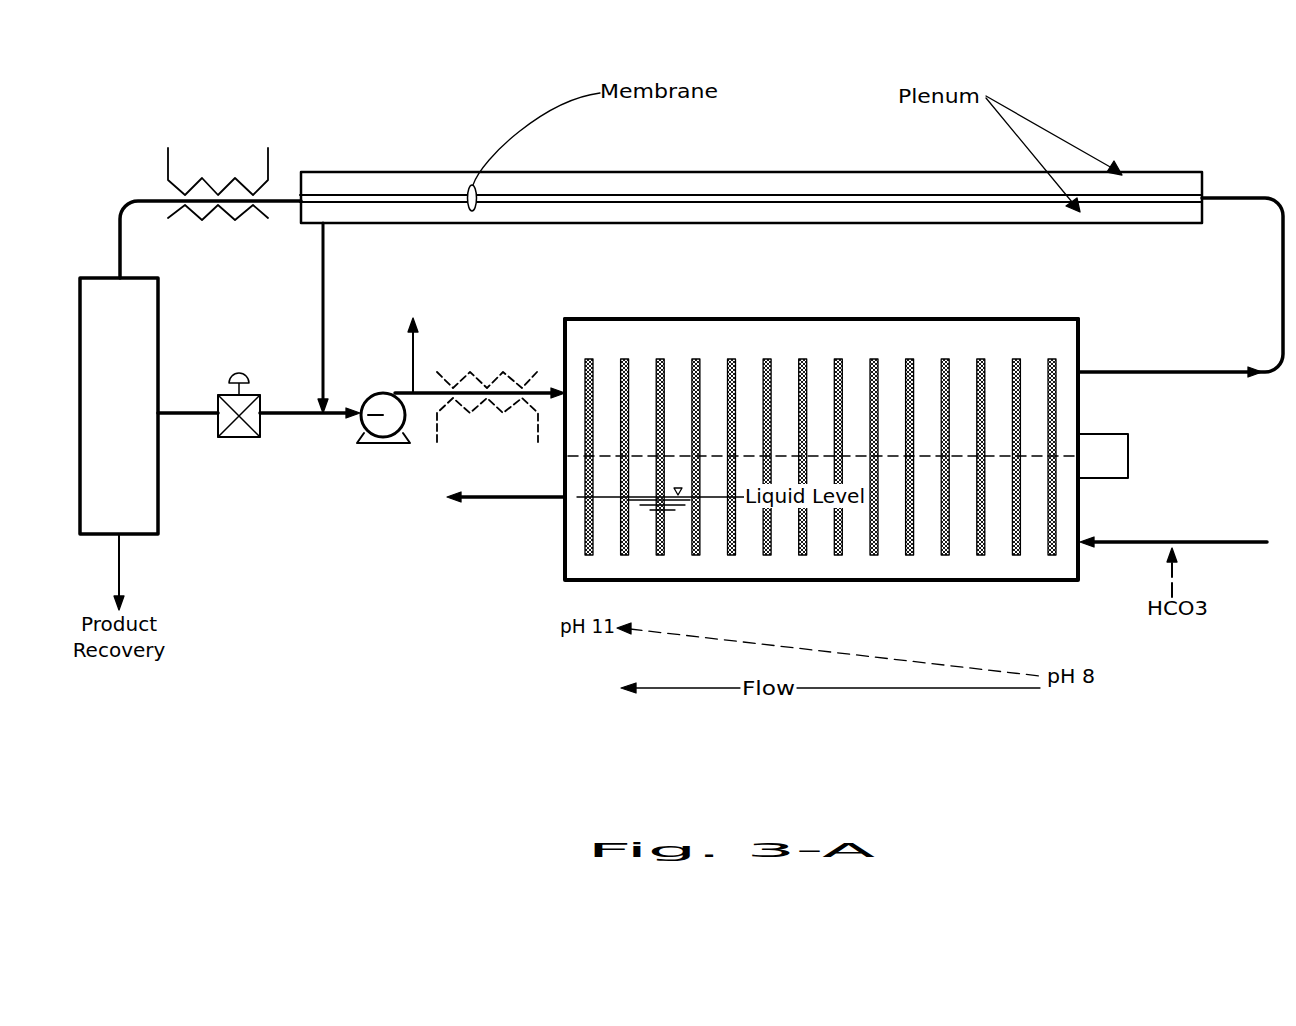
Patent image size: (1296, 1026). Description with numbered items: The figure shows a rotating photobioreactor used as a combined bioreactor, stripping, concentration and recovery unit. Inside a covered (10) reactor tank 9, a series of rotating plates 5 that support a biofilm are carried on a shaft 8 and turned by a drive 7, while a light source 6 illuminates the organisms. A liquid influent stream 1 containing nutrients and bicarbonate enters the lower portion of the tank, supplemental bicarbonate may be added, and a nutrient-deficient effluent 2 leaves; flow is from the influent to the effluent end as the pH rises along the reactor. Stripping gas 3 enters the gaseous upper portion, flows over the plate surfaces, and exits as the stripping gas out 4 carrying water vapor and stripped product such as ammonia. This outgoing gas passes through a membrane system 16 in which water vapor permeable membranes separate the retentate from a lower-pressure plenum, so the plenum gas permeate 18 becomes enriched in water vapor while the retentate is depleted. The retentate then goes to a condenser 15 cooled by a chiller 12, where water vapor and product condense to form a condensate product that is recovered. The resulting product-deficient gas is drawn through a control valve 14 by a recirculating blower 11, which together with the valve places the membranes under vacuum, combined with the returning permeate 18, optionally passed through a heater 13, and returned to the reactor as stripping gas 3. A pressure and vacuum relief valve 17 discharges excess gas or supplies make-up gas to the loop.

The influent stream 1 is at (1173, 527).
The effluent 2 is at (502, 522).
The stripping gas 3 is at (259, 450).
The stripping gas out 4 is at (1180, 287).
The rotating plates 5 is at (820, 457).
The light source 6 is at (820, 457).
The drive 7 is at (1156, 456).
The shaft 8 is at (823, 458).
The reactor tank 9 is at (885, 310).
The cover 10 is at (821, 299).
The blower 11 is at (457, 441).
The chiller 12 is at (210, 213).
The heater 13 is at (486, 388).
The control valve 14 is at (243, 360).
The condenser 15 is at (119, 406).
The gas permeable membrane 16 is at (751, 180).
The pressure and vacuum relief valve 17 is at (412, 329).
The plenum gas permeate 18 is at (322, 318).